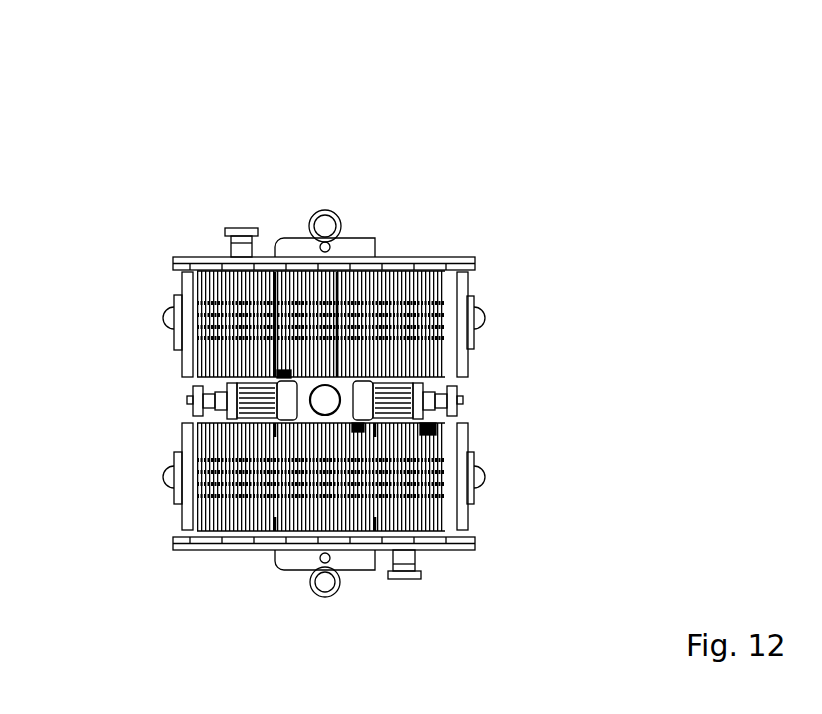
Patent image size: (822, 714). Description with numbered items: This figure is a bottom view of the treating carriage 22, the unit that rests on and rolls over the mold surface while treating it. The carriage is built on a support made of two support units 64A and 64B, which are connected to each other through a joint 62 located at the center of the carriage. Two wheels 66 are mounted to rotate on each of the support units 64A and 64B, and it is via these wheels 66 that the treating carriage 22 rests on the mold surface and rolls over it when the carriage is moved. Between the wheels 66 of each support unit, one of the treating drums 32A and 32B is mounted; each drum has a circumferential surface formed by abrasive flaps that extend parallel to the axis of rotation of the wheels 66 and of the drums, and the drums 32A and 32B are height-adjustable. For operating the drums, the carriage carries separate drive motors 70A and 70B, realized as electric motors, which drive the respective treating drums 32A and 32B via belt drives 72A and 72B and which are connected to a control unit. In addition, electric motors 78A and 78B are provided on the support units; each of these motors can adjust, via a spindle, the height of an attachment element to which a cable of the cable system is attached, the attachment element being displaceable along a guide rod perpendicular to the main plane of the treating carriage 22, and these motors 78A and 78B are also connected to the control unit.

The treating carriage 22 is at (538, 115).
The treating drum 32A is at (222, 285).
The treating drum 32B is at (237, 513).
The joint 62 is at (321, 413).
The support unit 64A is at (435, 258).
The support unit 64B is at (442, 552).
The wheels 66 is at (188, 277).
The drive motor 70A is at (397, 403).
The drive motor 70B is at (258, 393).
The belt drive 72A is at (450, 383).
The belt drive 72B is at (202, 412).
The electric motor 78A is at (326, 211).
The electric motor 78B is at (326, 597).